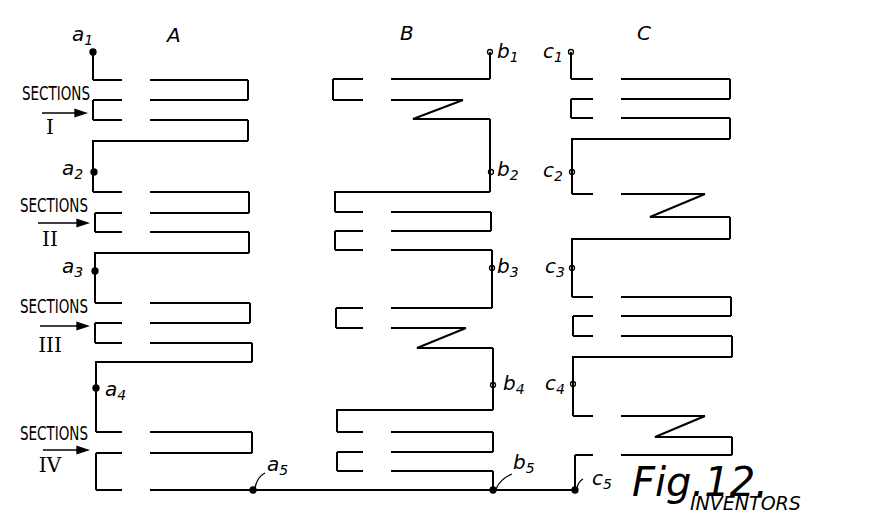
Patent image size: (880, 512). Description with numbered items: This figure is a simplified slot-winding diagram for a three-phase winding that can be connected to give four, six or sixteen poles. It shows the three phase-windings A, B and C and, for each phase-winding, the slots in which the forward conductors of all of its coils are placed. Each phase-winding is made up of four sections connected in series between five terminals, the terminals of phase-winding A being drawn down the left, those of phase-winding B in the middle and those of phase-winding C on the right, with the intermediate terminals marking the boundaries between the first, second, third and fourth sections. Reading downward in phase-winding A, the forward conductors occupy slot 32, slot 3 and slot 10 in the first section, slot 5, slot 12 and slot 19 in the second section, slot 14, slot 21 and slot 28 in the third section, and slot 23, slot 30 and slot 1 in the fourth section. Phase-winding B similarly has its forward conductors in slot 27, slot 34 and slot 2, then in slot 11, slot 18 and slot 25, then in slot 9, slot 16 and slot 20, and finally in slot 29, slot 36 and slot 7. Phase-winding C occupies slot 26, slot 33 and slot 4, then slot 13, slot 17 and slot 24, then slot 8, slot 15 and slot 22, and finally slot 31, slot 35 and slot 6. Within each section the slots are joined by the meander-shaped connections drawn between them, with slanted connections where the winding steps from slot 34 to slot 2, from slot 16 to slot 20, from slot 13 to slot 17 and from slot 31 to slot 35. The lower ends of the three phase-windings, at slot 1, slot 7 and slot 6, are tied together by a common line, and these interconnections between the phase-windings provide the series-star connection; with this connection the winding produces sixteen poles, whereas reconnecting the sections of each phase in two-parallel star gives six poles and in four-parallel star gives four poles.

The slot 1 is at (335, 490).
The slot 2 is at (427, 117).
The slot 3 is at (170, 100).
The slot 4 is at (650, 118).
The slot 5 is at (171, 192).
The slot 6 is at (653, 455).
The slot 7 is at (415, 471).
The slot 8 is at (651, 297).
The slot 9 is at (414, 308).
The slot 10 is at (170, 120).
The slot 11 is at (413, 212).
The slot 12 is at (172, 213).
The slot 13 is at (638, 194).
The slot 14 is at (172, 303).
The slot 15 is at (652, 316).
The slot 16 is at (401, 328).
The slot 17 is at (664, 209).
The slot 18 is at (413, 231).
The slot 19 is at (172, 232).
The slot 20 is at (431, 345).
The slot 21 is at (172, 323).
The slot 22 is at (652, 336).
The slot 23 is at (174, 432).
The slot 24 is at (651, 239).
The slot 25 is at (413, 250).
The slot 26 is at (650, 79).
The slot 27 is at (411, 79).
The slot 28 is at (173, 343).
The slot 29 is at (415, 432).
The slot 30 is at (174, 453).
The slot 31 is at (639, 415).
The slot 32 is at (170, 80).
The slot 33 is at (650, 99).
The slot 34 is at (398, 100).
The slot 35 is at (665, 431).
The slot 36 is at (415, 452).